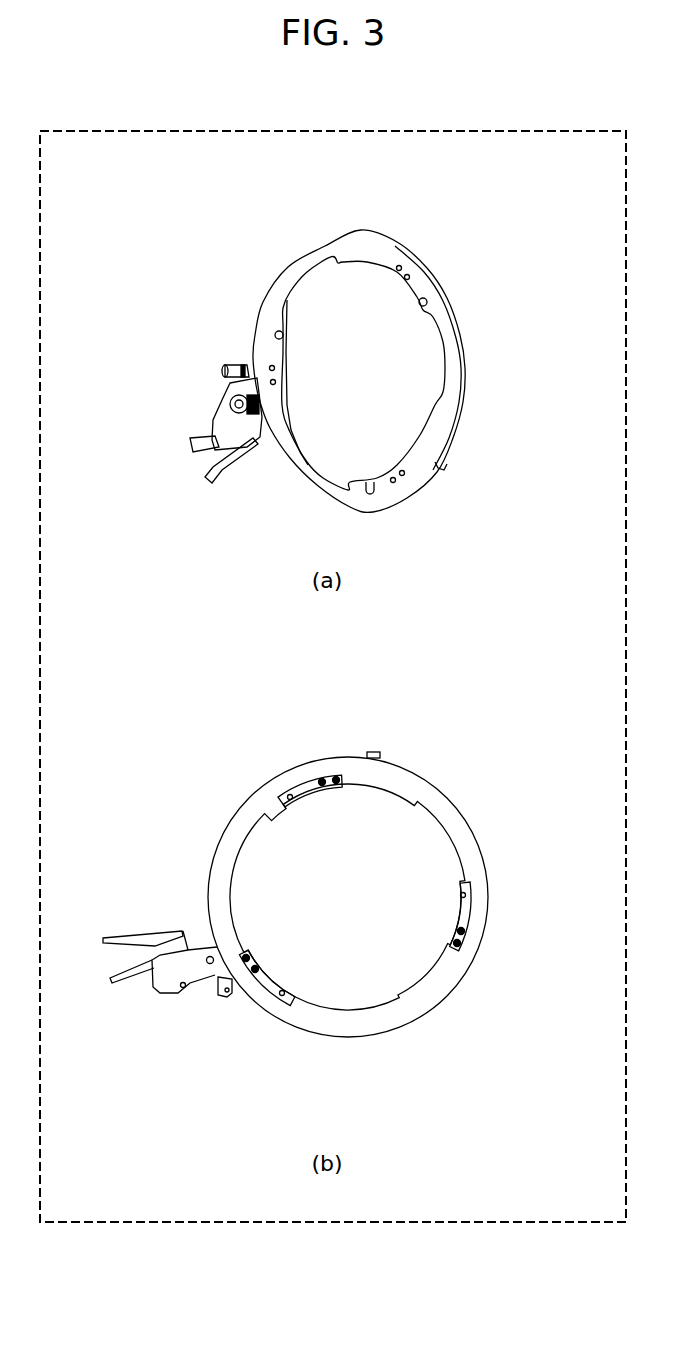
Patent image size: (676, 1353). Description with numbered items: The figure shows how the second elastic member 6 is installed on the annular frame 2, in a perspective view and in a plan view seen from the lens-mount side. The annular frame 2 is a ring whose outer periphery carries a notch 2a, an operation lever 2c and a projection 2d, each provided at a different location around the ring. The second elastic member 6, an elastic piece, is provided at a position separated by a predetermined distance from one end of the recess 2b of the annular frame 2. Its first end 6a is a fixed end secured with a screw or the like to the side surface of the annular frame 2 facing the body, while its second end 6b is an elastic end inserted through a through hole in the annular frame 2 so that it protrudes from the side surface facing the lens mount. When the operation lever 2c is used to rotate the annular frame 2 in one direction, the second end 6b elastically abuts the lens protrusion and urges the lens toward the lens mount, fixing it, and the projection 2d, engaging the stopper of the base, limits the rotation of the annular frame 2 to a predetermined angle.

The annular frame 2 is at (380, 253).
The notch 2a is at (325, 248).
The recess 2b is at (433, 360).
The operation lever 2c is at (217, 417).
The projection 2d is at (443, 468).
The second elastic member 6 is at (467, 915).
The first end 6a is at (330, 776).
The second end 6b is at (276, 333).